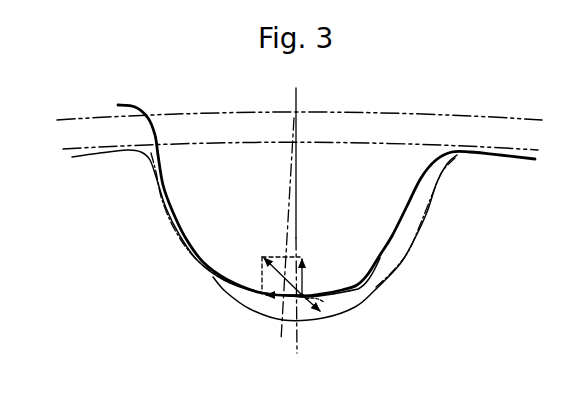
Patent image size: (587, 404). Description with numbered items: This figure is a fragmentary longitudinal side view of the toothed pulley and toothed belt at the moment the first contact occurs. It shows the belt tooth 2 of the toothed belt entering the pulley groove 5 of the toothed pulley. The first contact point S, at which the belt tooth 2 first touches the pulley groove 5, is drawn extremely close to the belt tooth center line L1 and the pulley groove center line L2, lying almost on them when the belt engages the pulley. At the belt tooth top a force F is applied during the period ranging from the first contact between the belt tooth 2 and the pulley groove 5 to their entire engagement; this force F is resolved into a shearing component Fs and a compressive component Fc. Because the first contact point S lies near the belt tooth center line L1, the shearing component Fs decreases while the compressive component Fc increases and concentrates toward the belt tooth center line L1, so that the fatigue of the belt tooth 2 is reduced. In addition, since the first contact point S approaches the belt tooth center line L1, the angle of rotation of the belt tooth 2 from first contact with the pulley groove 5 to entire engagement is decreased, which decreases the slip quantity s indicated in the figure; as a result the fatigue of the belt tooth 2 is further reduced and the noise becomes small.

The belt tooth 2 is at (381, 255).
The pulley groove 5 is at (357, 285).
The belt tooth center line L1 is at (290, 178).
The pulley groove center line L2 is at (298, 172).
The force F is at (272, 268).
The compressive component Fc is at (314, 268).
The shearing component Fs is at (277, 306).
The first contact point S is at (303, 298).
The slip quantity s is at (319, 305).